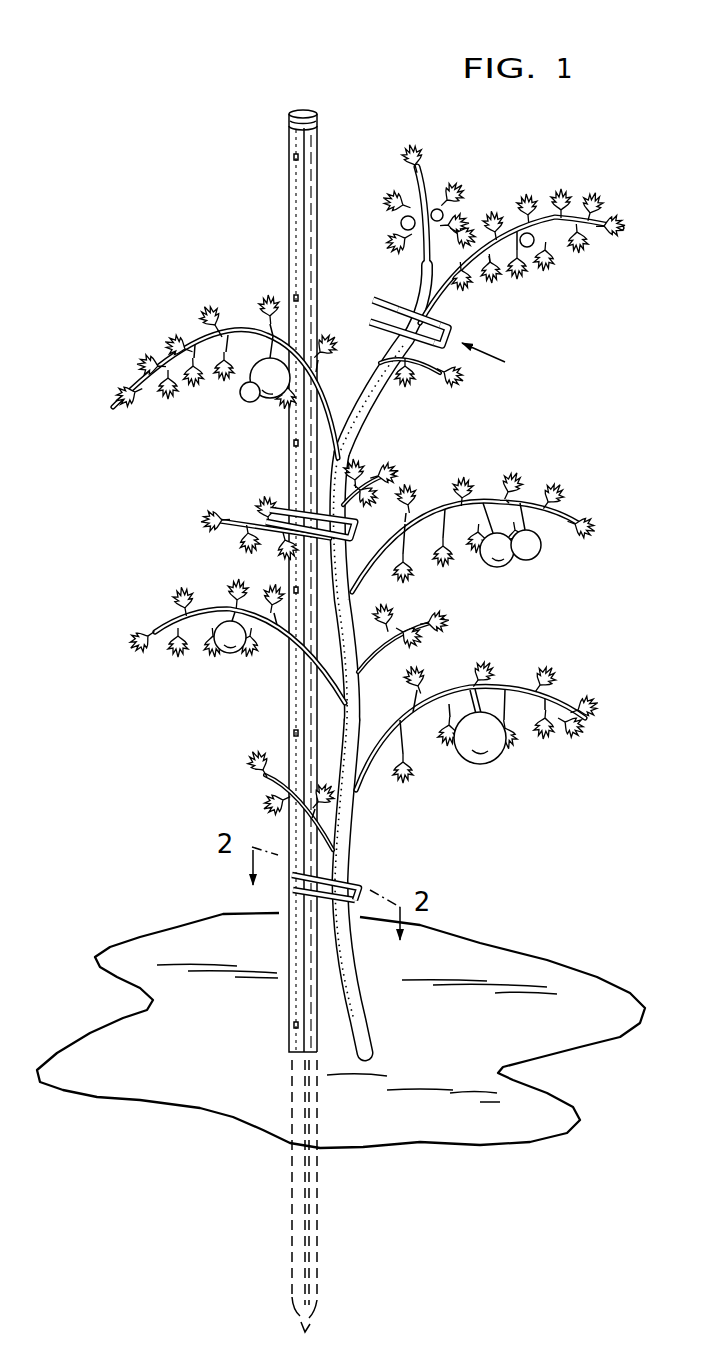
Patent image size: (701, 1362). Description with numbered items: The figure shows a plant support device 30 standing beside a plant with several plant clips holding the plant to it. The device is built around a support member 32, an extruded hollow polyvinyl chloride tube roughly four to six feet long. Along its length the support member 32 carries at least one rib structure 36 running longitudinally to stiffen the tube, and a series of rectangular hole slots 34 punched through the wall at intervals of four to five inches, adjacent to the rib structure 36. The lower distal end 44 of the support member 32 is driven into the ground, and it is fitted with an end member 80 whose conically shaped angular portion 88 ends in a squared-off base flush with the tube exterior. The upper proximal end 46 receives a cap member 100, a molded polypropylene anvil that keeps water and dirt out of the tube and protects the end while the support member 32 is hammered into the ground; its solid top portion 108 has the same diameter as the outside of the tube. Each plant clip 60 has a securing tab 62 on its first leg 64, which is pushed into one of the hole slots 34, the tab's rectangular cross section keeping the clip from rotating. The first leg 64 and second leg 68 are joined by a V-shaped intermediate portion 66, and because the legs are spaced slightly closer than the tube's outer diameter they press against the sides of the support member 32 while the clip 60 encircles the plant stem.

The plant support device 30 is at (270, 244).
The support member 32 is at (321, 152).
The hole slots 34 is at (294, 298).
The rib structure 36 is at (301, 173).
The distal end 44 is at (320, 1290).
The proximal end 46 is at (289, 126).
The plant clip 60 is at (458, 323).
The securing tab 62 is at (373, 312).
The first leg 64 is at (400, 346).
The intermediate portion 66 is at (446, 350).
The second leg 68 is at (388, 298).
The end member 80 is at (297, 1318).
The angular portion 88 is at (313, 1322).
The cap member 100 is at (313, 98).
The top portion 108 is at (303, 110).